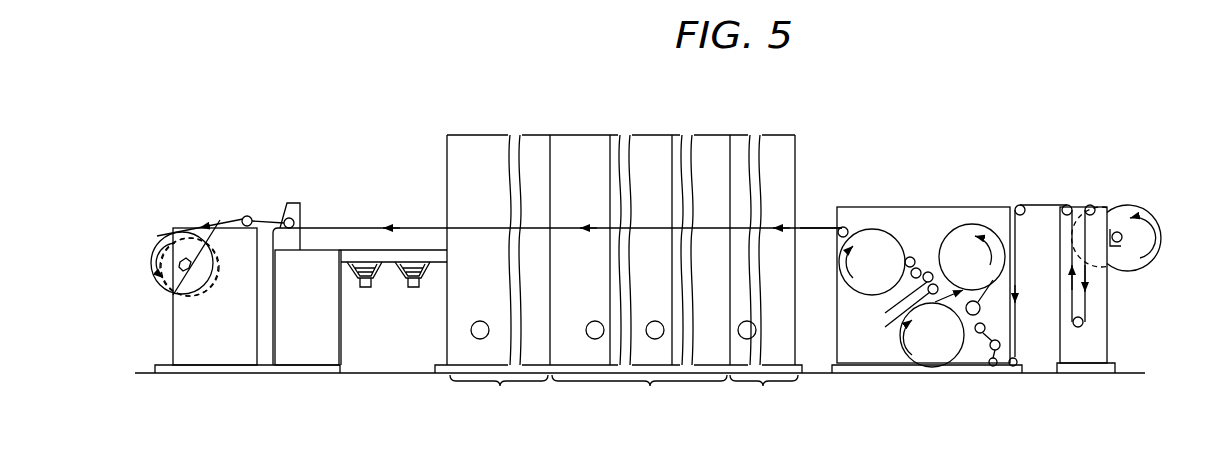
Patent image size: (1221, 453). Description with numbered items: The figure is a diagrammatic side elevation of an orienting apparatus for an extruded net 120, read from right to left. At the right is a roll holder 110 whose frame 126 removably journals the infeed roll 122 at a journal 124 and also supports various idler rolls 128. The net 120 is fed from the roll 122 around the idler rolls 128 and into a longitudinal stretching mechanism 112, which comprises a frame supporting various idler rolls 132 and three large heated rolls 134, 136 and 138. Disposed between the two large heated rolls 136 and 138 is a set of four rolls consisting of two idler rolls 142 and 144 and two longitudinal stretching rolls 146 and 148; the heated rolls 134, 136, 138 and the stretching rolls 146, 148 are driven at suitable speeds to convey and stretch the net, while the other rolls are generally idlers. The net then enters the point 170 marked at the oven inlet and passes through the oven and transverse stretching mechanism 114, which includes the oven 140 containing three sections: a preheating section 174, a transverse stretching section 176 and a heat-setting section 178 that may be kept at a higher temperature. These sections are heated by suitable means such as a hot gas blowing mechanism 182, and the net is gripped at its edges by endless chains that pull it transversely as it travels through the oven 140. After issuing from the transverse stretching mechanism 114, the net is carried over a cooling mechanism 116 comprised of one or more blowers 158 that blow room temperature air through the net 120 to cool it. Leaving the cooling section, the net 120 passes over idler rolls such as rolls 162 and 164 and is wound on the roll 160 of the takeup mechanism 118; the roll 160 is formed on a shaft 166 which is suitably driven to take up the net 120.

The roll holder 110 is at (1086, 148).
The longitudinal stretching mechanism 112 is at (950, 202).
The oven and transverse stretching mechanism 114 is at (629, 131).
The cooling mechanism 116 is at (375, 213).
The takeup mechanism 118 is at (182, 222).
The extruded net 120 is at (381, 228).
The infeed roll 122 is at (1130, 206).
The journal 124 is at (1119, 244).
The frame 126 is at (1105, 327).
The idler rolls 128 is at (1065, 205).
The idler rolls 132 is at (846, 228).
The large heated roll 134 is at (918, 351).
The large heated roll 136 is at (958, 271).
The large heated roll 138 is at (858, 276).
The oven 140 is at (636, 217).
The idler roll 142 is at (910, 257).
The idler roll 144 is at (885, 327).
The longitudinal stretching roll 146 is at (922, 268).
The longitudinal stretching roll 148 is at (885, 313).
The blowers 158 is at (366, 289).
The takeup roll 160 is at (155, 262).
The idler roll 162 is at (294, 221).
The idler roll 164 is at (247, 216).
The shaft 166 is at (190, 275).
The web entry to oven 170 is at (813, 215).
The preheating section 174 is at (764, 400).
The transverse stretching section 176 is at (639, 400).
The heat-setting section 178 is at (499, 399).
The hot gas blowing mechanism 182 is at (480, 321).